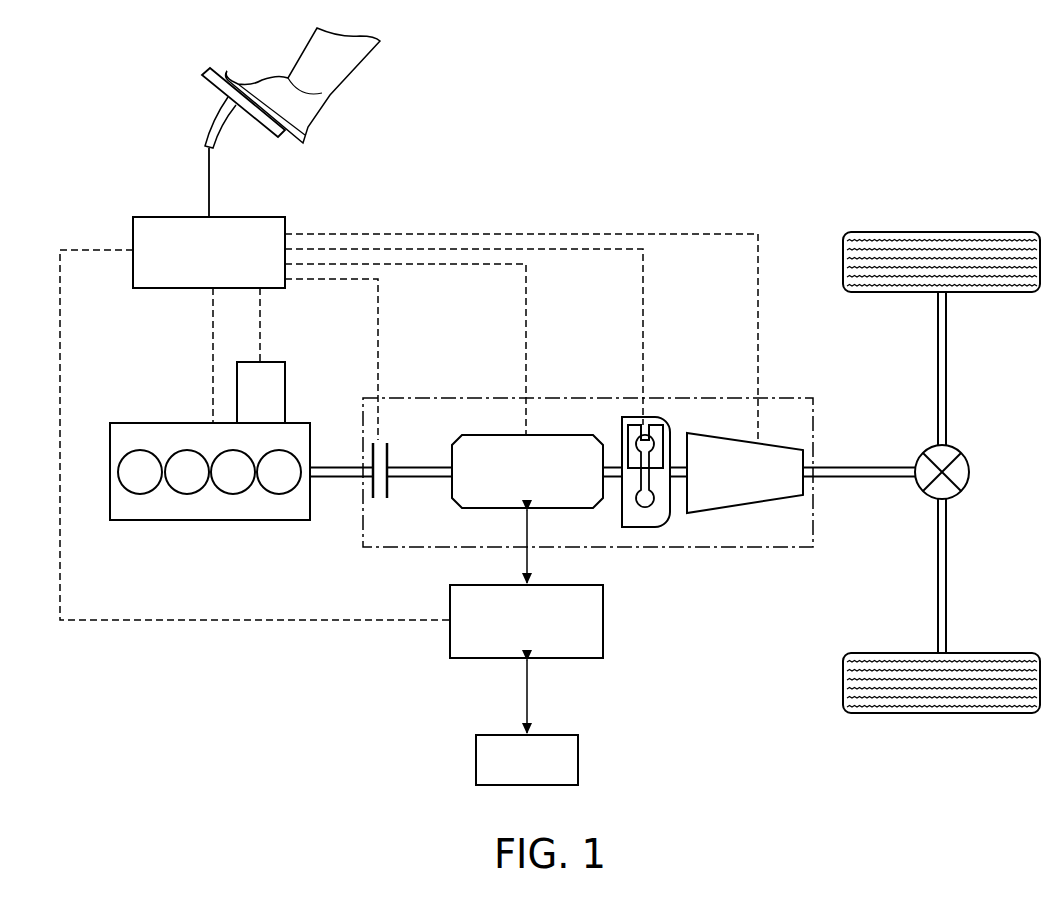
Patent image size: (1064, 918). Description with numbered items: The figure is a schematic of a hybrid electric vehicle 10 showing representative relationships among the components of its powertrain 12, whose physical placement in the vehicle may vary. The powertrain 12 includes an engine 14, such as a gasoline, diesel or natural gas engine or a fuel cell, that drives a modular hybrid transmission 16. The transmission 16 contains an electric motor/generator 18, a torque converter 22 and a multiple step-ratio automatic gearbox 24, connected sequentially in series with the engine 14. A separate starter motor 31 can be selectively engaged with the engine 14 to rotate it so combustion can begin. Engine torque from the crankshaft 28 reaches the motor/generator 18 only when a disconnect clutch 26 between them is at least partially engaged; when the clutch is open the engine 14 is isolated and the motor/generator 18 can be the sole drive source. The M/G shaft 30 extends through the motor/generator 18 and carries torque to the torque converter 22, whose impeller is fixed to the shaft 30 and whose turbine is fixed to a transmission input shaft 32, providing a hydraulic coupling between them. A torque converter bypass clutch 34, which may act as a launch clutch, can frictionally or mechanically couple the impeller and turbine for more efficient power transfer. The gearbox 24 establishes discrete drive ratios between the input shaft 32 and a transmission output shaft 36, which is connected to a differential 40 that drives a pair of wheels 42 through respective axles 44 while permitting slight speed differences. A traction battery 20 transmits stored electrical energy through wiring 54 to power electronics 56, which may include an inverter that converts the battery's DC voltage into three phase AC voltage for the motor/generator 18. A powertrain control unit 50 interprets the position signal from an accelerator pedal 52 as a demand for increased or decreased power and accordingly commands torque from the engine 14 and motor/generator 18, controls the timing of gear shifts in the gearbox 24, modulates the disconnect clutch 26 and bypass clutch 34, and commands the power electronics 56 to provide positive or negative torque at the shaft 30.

The hybrid electric vehicle 10 is at (820, 157).
The powertrain 12 is at (331, 660).
The engine 14 is at (170, 423).
The transmission 16 is at (565, 398).
The electric motor/generator 18 is at (500, 435).
The traction battery 20 is at (578, 760).
The torque converter 22 is at (640, 527).
The gearbox 24 is at (735, 513).
The disconnect clutch 26 is at (390, 490).
The crankshaft 28 is at (342, 466).
The M/G shaft 30 is at (428, 467).
The starter motor 31 is at (270, 362).
The transmission input shaft 32 is at (677, 467).
The torque converter bypass clutch 34 is at (646, 425).
The transmission output shaft 36 is at (862, 467).
The differential 40 is at (970, 470).
The wheels 42 is at (943, 232).
The axles 44 is at (947, 380).
The controller 50 is at (168, 217).
The accelerator pedal 52 is at (221, 92).
The wiring 54 is at (530, 697).
The power electronics 56 is at (603, 625).